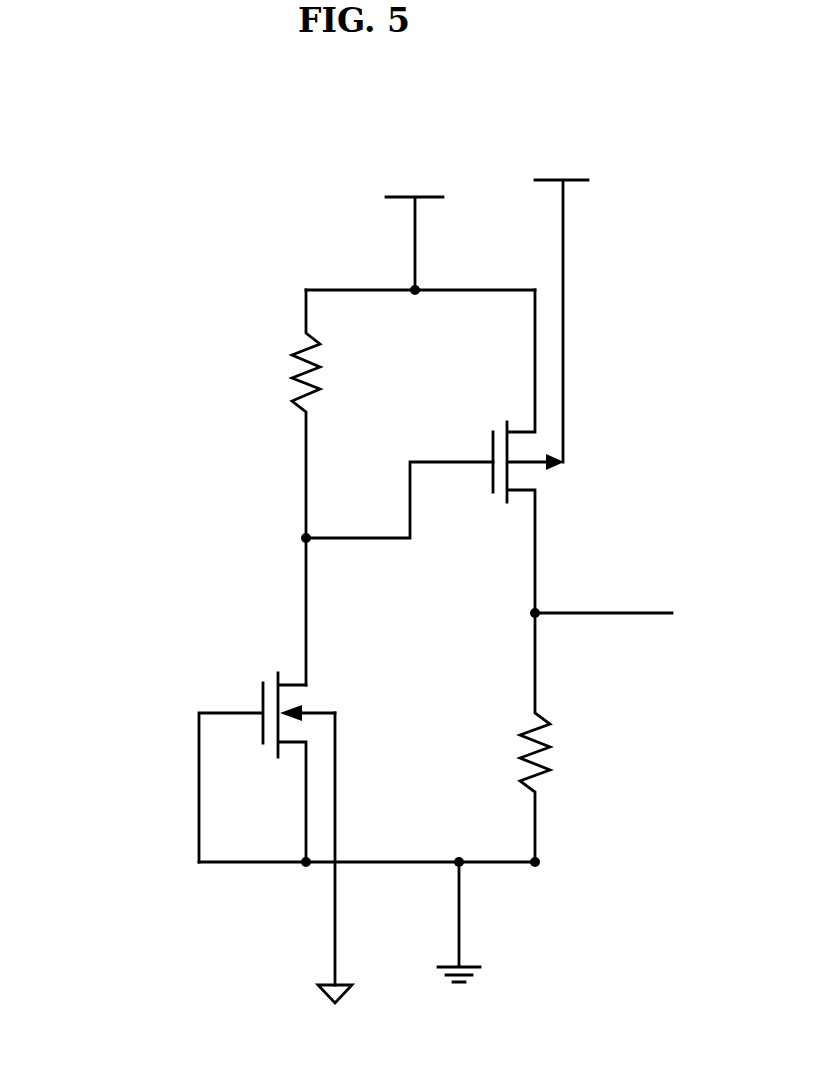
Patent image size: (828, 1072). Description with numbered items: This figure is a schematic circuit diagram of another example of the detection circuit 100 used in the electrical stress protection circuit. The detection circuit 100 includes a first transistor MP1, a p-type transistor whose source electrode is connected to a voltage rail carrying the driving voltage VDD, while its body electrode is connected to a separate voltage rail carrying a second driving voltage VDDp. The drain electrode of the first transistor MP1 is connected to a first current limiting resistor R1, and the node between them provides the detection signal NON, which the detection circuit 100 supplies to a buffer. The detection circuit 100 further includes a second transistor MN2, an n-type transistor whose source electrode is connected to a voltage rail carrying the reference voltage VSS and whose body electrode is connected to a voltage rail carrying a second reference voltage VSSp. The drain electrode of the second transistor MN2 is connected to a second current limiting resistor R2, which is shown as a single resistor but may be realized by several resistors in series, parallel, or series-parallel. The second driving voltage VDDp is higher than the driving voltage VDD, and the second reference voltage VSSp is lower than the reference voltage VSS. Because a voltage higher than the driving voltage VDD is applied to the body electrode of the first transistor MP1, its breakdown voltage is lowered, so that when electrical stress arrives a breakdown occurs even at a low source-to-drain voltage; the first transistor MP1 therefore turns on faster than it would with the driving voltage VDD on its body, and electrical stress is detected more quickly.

The detection circuit 100 is at (199, 243).
The first current limiting resistor R1 is at (515, 737).
The second current limiting resistor R2 is at (286, 487).
The first transistor MP1 is at (506, 451).
The second transistor MN2 is at (267, 767).
The driving voltage VDD is at (414, 220).
The second driving voltage VDDp is at (564, 297).
The reference voltage VSS is at (494, 922).
The second reference voltage VSSp is at (291, 858).
The detection signal NON is at (601, 590).